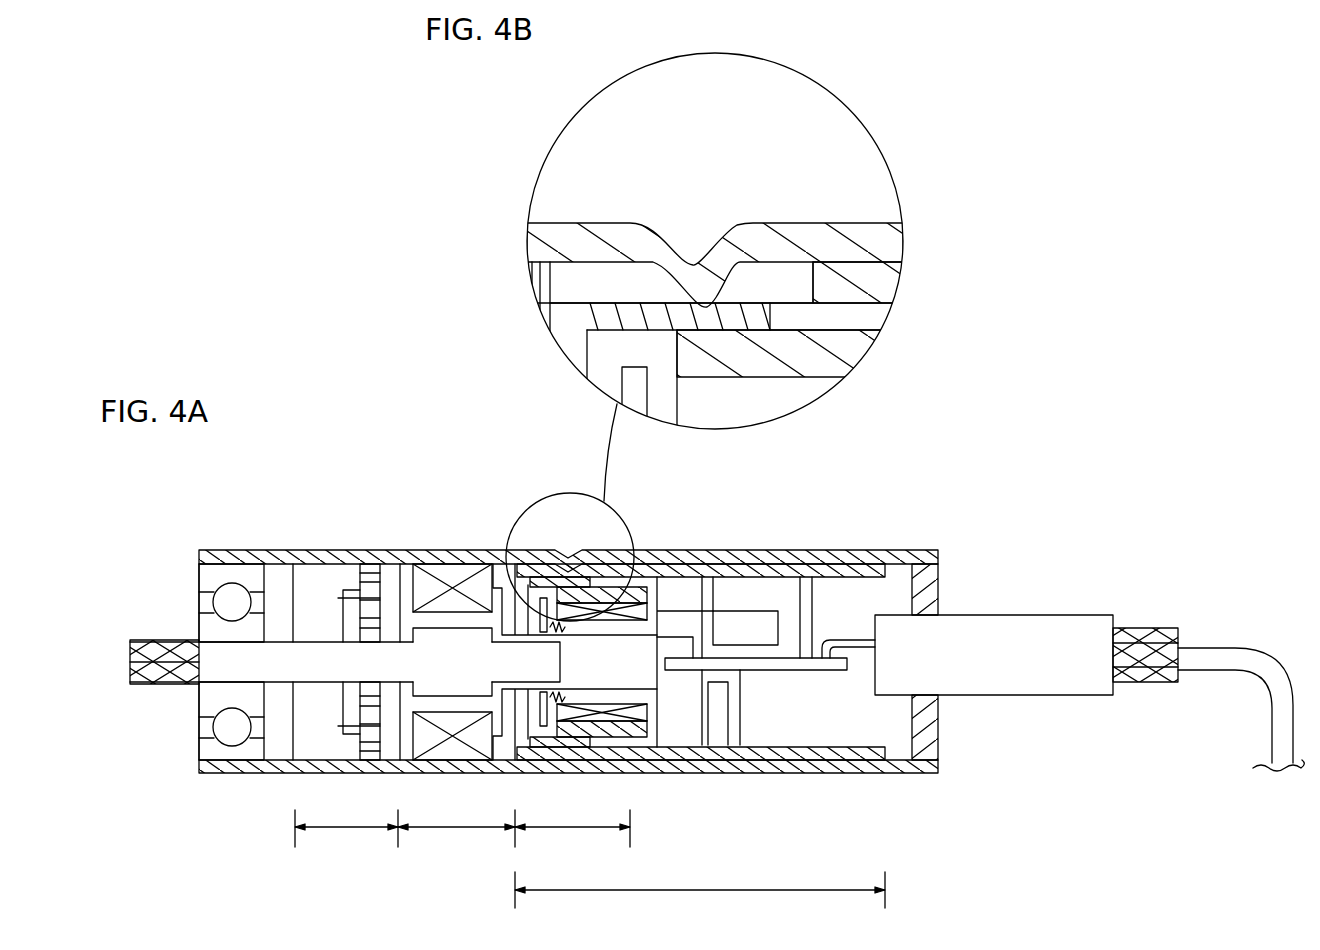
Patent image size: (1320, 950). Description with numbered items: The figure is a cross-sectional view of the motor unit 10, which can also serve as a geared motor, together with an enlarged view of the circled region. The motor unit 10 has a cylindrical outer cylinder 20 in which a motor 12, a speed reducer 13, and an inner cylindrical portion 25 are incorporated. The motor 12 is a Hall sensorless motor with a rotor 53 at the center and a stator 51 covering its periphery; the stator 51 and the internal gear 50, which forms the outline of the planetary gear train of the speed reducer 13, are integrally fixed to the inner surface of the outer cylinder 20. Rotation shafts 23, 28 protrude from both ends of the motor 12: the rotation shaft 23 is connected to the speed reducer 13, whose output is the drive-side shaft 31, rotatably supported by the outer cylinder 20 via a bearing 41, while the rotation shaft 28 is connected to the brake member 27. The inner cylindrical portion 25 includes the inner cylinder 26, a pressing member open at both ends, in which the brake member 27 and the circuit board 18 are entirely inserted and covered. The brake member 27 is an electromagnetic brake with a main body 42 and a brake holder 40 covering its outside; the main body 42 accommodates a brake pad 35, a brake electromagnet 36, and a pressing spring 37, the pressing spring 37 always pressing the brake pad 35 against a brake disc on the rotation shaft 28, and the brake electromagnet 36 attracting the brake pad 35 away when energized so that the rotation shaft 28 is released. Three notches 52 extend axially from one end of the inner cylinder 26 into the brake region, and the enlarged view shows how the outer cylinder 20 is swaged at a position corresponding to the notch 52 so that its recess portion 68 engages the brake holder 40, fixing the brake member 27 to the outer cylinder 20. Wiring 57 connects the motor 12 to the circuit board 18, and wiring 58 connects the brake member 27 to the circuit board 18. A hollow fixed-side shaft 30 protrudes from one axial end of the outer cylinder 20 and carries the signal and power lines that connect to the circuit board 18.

In FIG. 4A, the motor unit 10 is at (887, 482).
In FIG. 4A, the motor 12 is at (456, 821).
In FIG. 4A, the speed reducer 13 is at (346, 821).
In FIG. 4A, the circuit board 18 is at (813, 650).
In FIG. 4A, the outer cylinder 20 is at (320, 555).
In FIG. 4A, the rotation shaft 23 is at (387, 660).
In FIG. 4A, the inner cylindrical portion 25 is at (700, 884).
In FIG. 4A, the inner cylinder 26 is at (863, 752).
In FIG. 4A, the brake member 27 is at (572, 821).
In FIG. 4A, the rotation shaft 28 is at (543, 667).
In FIG. 4A, the fixed-side shaft 30 is at (993, 648).
In FIG. 4A, the drive-side shaft 31 is at (220, 658).
In FIG. 4A, the brake pad 35 is at (533, 582).
In FIG. 4A, the brake electromagnet 36 is at (602, 713).
In FIG. 4A, the pressing spring 37 is at (561, 590).
In FIG. 4A, the brake holder 40 is at (631, 576).
In FIG. 4B, the brake holder 40 is at (860, 320).
In FIG. 4A, the bearing 41 is at (203, 552).
In FIG. 4A, the main body 42 is at (647, 582).
In FIG. 4A, the internal gear 50 is at (373, 564).
In FIG. 4A, the stator 51 is at (443, 575).
In FIG. 4B, the notch 52 is at (604, 276).
In FIG. 4A, the rotor 53 is at (461, 672).
In FIG. 4A, the wiring 57 is at (712, 612).
In FIG. 4A, the wiring 58 is at (822, 643).
In FIG. 4B, the recess portion 68 is at (725, 265).